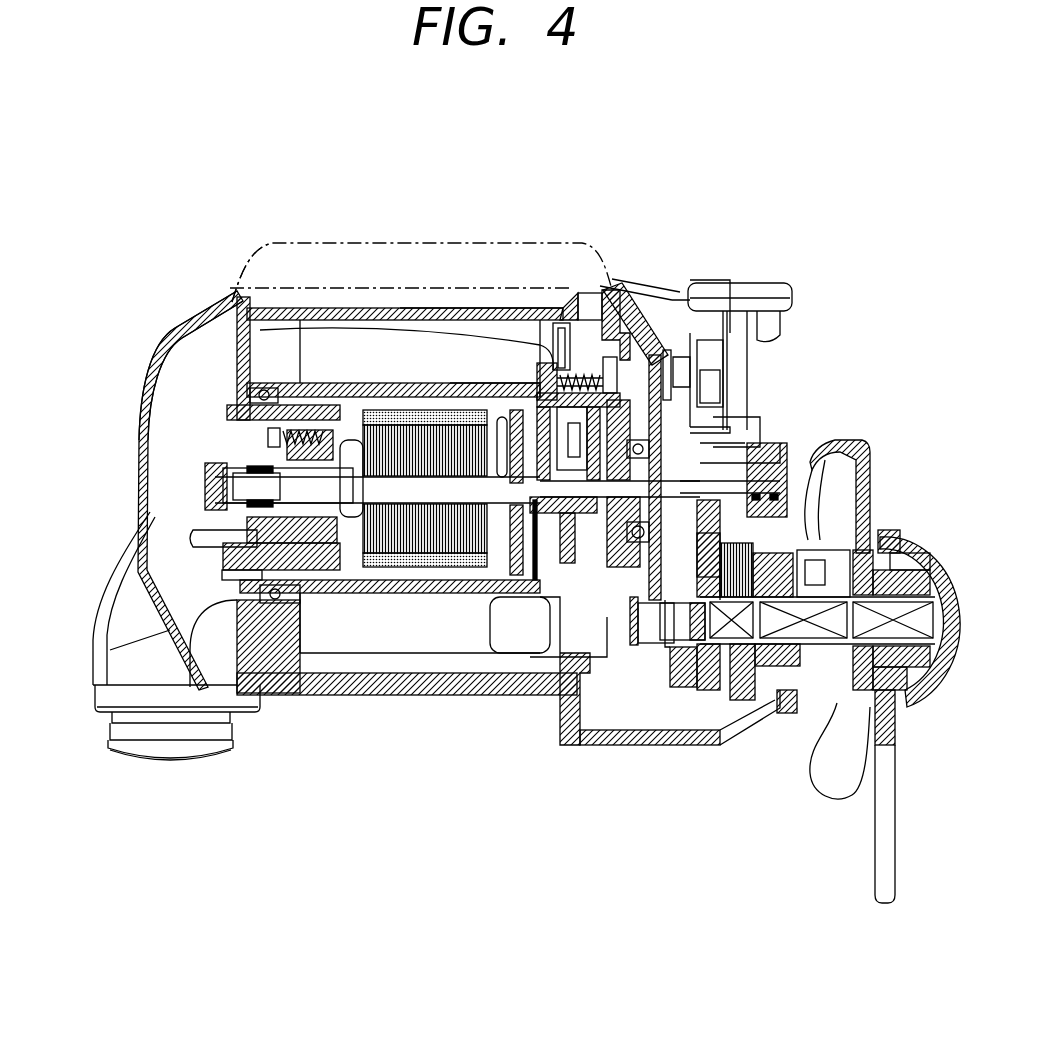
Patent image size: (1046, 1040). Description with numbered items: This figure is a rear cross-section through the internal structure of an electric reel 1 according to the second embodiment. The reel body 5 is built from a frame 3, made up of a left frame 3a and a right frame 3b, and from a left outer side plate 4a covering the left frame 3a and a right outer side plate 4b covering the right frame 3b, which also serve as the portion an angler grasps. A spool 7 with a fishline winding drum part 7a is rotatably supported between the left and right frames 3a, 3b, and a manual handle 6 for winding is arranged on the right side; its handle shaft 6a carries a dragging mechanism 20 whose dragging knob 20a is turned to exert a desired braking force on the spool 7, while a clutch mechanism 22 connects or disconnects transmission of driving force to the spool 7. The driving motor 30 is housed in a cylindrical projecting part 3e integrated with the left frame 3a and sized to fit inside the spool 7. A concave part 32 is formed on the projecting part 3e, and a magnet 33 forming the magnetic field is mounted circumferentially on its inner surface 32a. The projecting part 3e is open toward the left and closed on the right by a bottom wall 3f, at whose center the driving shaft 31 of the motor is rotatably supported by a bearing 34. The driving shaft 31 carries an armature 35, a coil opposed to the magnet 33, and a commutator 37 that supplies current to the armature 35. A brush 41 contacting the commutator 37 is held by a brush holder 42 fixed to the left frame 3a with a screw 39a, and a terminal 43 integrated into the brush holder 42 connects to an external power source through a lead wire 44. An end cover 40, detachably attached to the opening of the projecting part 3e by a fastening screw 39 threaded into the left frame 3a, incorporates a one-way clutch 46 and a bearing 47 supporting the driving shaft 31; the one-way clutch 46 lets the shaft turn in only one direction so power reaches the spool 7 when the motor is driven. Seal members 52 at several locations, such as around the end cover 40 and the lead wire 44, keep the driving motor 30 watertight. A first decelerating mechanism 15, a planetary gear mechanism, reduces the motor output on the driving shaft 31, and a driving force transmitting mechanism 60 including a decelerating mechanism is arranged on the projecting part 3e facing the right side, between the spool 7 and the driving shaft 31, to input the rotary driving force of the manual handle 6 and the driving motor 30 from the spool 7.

The electric reel 1 is at (579, 190).
The frame 3 is at (228, 362).
The left frame 3a is at (236, 292).
The right frame 3b is at (630, 673).
The cylindrical projecting part 3e is at (337, 320).
The bottom wall 3f is at (537, 595).
The left outer side plate 4a is at (170, 345).
The right outer side plate 4b is at (630, 387).
The reel body 5 is at (211, 294).
The manual handle 6 is at (898, 826).
The handle shaft 6a is at (773, 690).
The spool 7 is at (303, 320).
The fishline winding drum part 7a is at (457, 320).
The first decelerating mechanism 15 is at (579, 540).
The dragging mechanism 20 is at (827, 530).
The dragging knob 20a is at (834, 794).
The clutch mechanism 22 is at (740, 461).
The driving motor 30 is at (393, 565).
The driving shaft 31 is at (500, 603).
The concave part 32 is at (400, 320).
The inner surface 32a is at (503, 320).
The magnet 33 is at (445, 565).
The bearing 34 is at (560, 620).
The armature 35 is at (405, 570).
The commutator 37 is at (360, 565).
The fastening screw 39 is at (193, 640).
The screw 39a is at (270, 440).
The end cover 40 is at (270, 469).
The brush 41 is at (325, 572).
The brush holder 42 is at (377, 320).
The terminal 43 is at (296, 592).
The lead wire 44 is at (255, 547).
The one-way clutch 46 is at (262, 520).
The bearing 47 is at (318, 498).
The seal member 52 is at (245, 405).
The driving force transmitting mechanism 60 is at (672, 332).